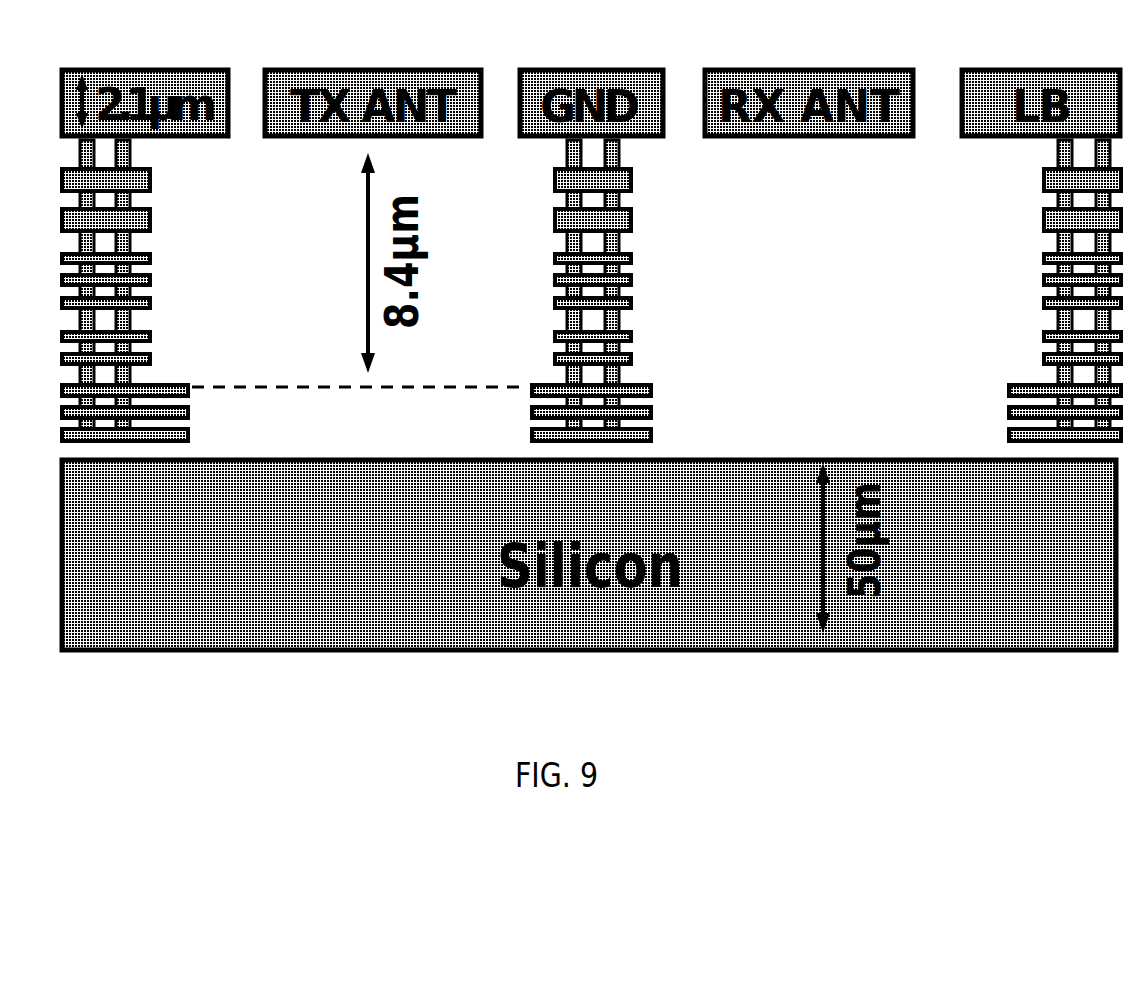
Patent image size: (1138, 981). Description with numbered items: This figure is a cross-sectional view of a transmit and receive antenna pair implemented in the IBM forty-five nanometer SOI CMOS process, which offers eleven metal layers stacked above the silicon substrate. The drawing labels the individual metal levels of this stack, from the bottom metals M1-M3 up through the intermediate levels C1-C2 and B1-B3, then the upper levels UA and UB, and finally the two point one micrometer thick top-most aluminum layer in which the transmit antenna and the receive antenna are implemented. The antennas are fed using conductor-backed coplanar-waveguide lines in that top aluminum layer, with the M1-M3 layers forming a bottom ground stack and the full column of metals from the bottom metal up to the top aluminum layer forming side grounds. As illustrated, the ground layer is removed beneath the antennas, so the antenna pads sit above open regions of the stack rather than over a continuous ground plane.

The UB metal layer UB is at (591, 177).
The UA metal layer UA is at (591, 223).
The B1-B3 metal layers B1-B3 is at (642, 250).
The C1-C2 metal layers C1-C2 is at (642, 330).
The bottom ground stack M1-M3 is at (663, 383).